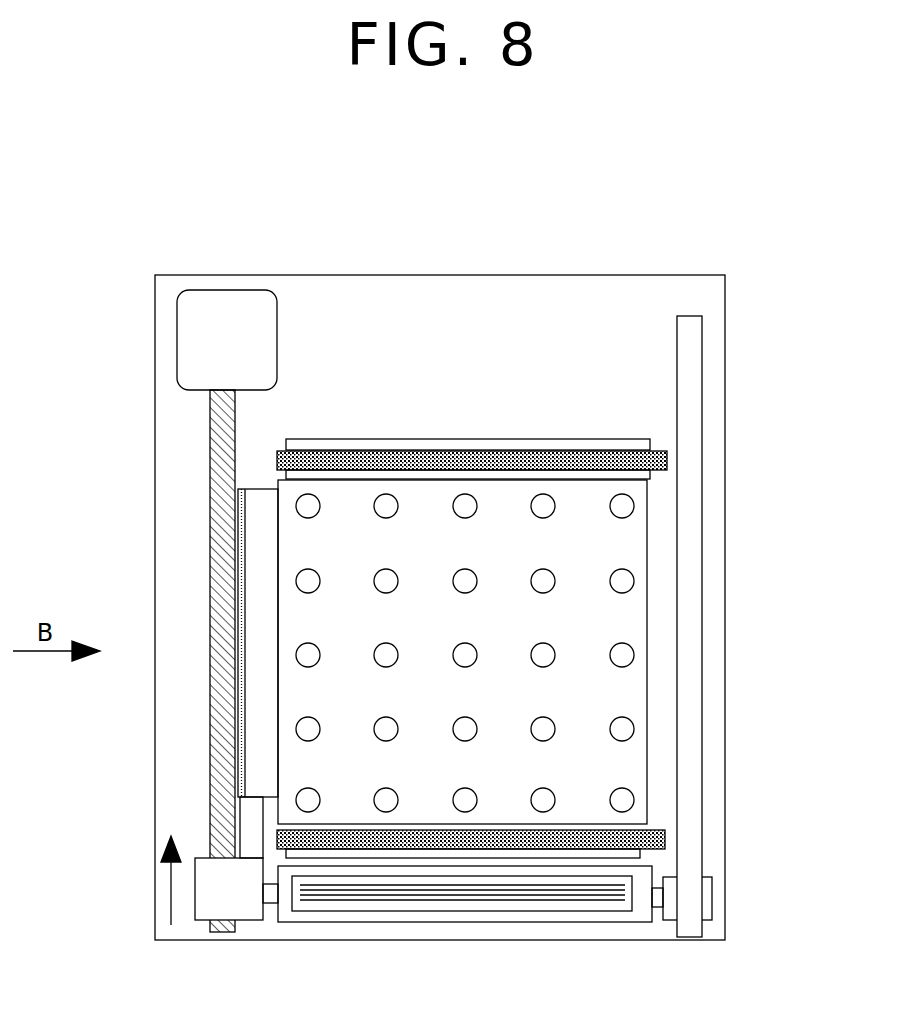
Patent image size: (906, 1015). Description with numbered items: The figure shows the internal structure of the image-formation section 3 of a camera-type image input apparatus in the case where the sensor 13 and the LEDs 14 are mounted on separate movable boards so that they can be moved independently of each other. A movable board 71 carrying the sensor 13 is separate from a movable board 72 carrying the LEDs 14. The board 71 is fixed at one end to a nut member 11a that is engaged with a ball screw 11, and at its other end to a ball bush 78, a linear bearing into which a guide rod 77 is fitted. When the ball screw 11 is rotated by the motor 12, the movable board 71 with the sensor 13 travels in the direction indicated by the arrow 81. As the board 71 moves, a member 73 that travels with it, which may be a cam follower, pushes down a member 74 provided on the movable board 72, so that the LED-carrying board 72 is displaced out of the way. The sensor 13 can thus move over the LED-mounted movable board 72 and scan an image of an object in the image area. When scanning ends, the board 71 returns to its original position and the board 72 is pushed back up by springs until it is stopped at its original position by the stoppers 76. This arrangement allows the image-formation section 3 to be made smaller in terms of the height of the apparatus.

The image-formation section 3 is at (578, 275).
The ball screw 11 is at (210, 738).
The nut member 11a is at (217, 900).
The motor 12 is at (177, 320).
The sensor 13 is at (531, 903).
The LEDs 14 is at (622, 655).
The movable board 71 is at (641, 922).
The movable board 72 is at (533, 652).
The member 73 is at (245, 842).
The member 74 is at (253, 505).
The stoppers 76 is at (667, 462).
The guide rod 77 is at (692, 744).
The ball bush 78 is at (703, 895).
The arrow 81 is at (168, 905).